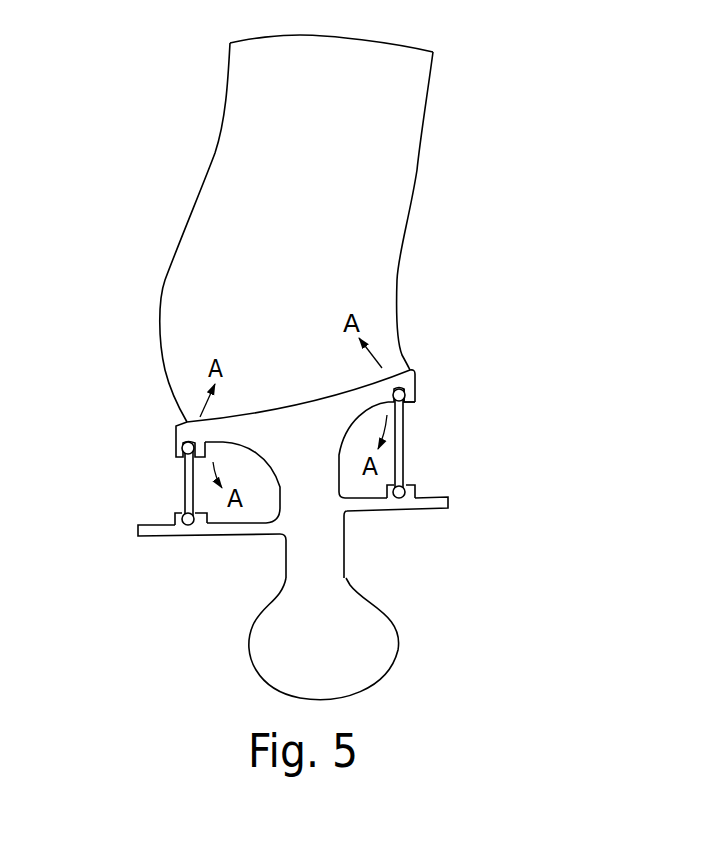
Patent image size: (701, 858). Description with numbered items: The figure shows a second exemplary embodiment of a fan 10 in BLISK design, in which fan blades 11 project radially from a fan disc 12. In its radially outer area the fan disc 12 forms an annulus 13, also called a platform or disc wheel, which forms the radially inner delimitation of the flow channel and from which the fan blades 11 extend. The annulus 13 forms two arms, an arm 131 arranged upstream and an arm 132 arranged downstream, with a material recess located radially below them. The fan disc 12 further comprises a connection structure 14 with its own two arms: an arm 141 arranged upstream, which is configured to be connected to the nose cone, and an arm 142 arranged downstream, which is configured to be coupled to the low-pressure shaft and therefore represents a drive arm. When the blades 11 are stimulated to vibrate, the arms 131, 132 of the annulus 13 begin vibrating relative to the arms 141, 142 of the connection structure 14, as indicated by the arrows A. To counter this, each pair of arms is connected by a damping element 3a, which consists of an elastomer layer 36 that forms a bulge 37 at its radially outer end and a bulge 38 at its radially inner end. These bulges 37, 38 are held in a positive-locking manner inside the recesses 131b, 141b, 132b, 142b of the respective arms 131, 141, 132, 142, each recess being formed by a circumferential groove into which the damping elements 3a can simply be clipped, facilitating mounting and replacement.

The fan 10 is at (186, 130).
The fan blades 11 is at (208, 217).
The fan disc 12 is at (302, 587).
The annulus 13 is at (298, 450).
The connection structure 14 is at (243, 537).
The arm 142 is at (370, 503).
The arm 131 is at (183, 433).
The recess 131b is at (183, 440).
The arm 132 is at (408, 367).
The recess 132b is at (415, 377).
The arm 141 is at (150, 530).
The recess 141b is at (192, 527).
The recess 142b is at (410, 498).
The damping element 3a is at (163, 480).
The elastomer layer 36 is at (405, 428).
The bulge 37 is at (407, 393).
The bulge 38 is at (412, 492).